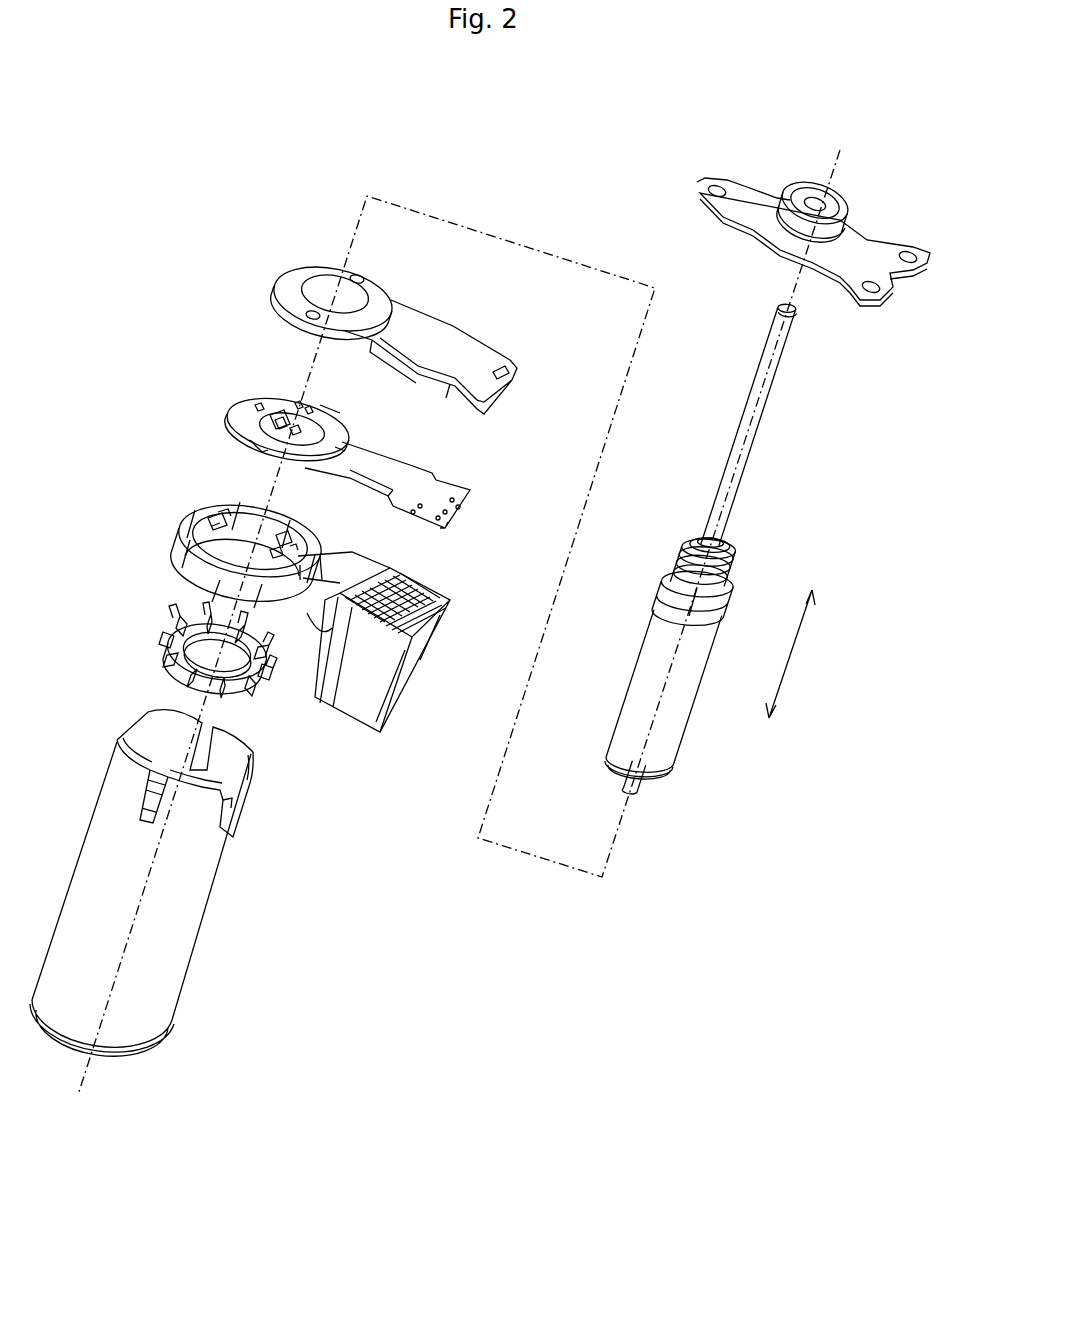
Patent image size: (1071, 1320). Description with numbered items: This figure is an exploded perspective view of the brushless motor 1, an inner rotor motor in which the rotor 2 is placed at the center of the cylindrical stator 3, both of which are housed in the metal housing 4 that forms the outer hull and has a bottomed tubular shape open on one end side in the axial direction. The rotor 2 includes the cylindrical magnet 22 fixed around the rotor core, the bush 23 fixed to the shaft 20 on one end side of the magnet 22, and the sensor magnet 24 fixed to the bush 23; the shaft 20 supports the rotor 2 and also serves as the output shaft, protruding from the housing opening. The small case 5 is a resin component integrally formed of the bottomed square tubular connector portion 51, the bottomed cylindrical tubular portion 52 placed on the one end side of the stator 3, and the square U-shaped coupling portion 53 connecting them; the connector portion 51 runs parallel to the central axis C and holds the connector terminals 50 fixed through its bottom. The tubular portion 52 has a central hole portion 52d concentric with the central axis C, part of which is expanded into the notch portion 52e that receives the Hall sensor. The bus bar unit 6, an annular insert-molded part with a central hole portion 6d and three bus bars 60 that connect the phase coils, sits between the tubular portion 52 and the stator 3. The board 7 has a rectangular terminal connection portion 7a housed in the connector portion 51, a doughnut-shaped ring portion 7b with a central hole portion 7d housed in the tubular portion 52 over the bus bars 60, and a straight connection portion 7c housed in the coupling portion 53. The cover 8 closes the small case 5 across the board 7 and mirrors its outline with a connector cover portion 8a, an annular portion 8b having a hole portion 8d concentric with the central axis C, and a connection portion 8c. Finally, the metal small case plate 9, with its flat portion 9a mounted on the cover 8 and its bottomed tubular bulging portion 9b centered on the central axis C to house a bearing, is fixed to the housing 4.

The brushless motor 1 is at (175, 161).
The rotor 2 is at (688, 768).
The stator 3 is at (158, 763).
The housing 4 is at (170, 1015).
The small case 5 is at (181, 494).
The bus bar unit 6 is at (153, 604).
The hole portion 6d is at (215, 627).
The board 7 is at (216, 384).
The terminal connection portion 7a is at (448, 490).
The ring portion 7b is at (340, 433).
The connection portion 7c is at (385, 462).
The hole portion 7d is at (272, 405).
The cover 8 is at (260, 267).
The connector cover portion 8a is at (475, 346).
The annular portion 8b is at (292, 298).
The connection portion 8c is at (415, 330).
The hole portion 8d is at (345, 283).
The small case plate 9 is at (870, 321).
The flat portion 9a is at (888, 248).
The bulging portion 9b is at (810, 190).
The shaft 20 is at (758, 452).
The magnet 22 is at (615, 728).
The bush 23 is at (660, 590).
The sensor magnet 24 is at (665, 555).
The connector terminals 50 is at (441, 572).
The connector portion 51 is at (380, 735).
The tubular portion 52 is at (185, 548).
The hole portion 52d is at (285, 540).
The notch portion 52e is at (225, 527).
The coupling portion 53 is at (345, 562).
The bus bars 60 is at (270, 683).
The central axis C is at (461, 608).